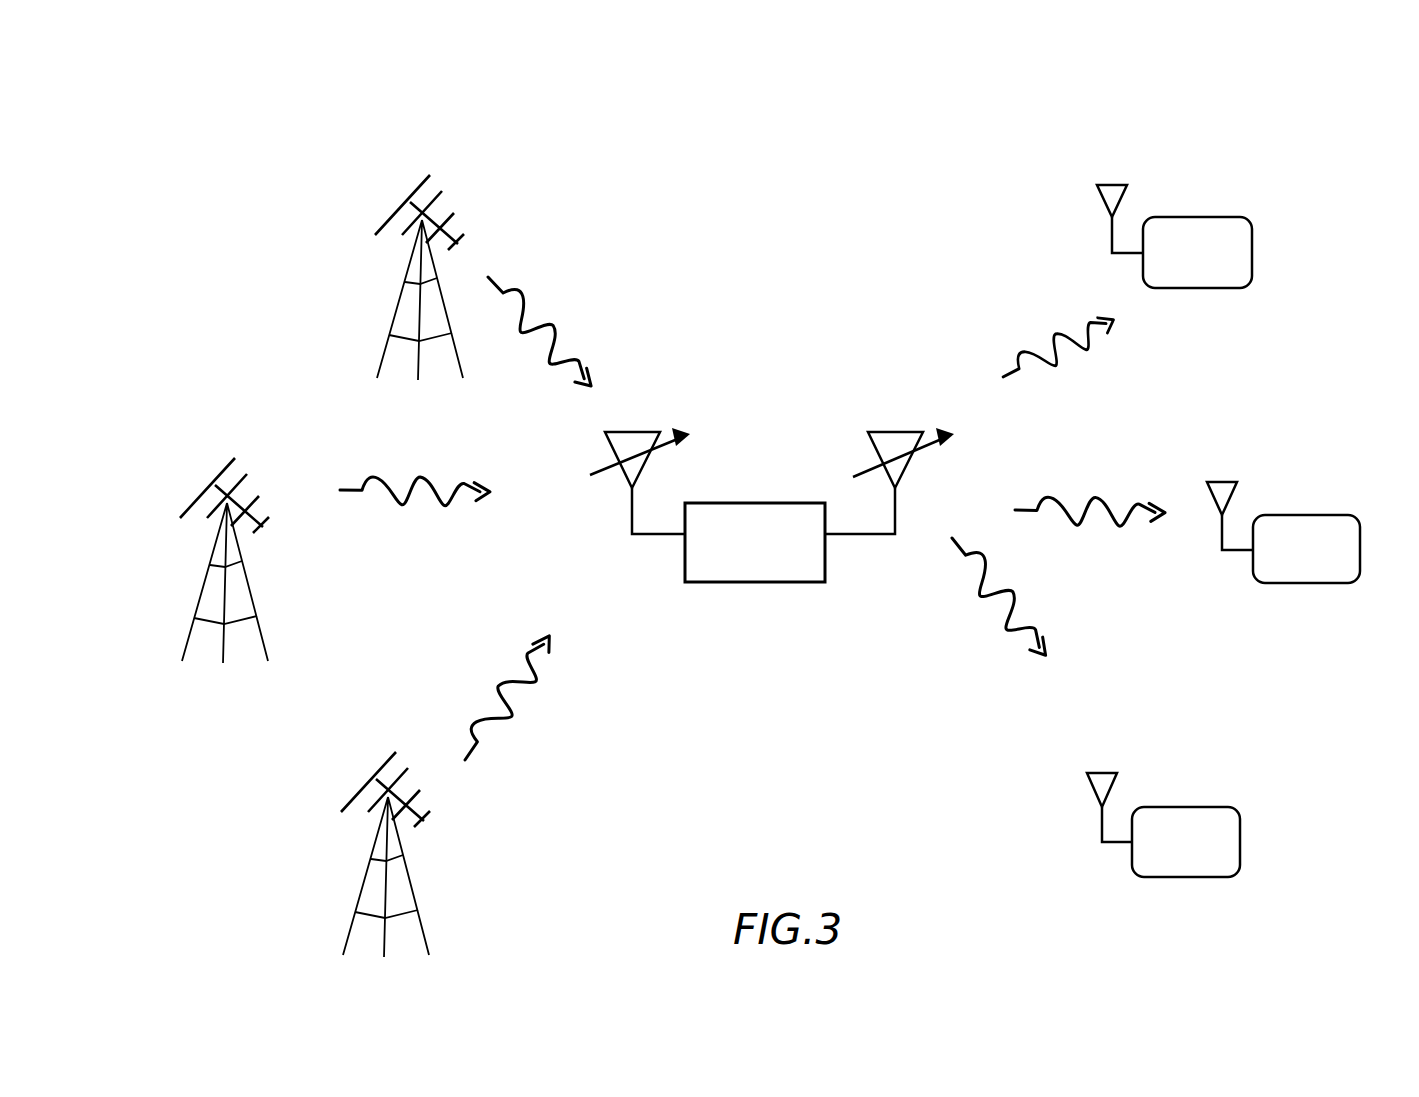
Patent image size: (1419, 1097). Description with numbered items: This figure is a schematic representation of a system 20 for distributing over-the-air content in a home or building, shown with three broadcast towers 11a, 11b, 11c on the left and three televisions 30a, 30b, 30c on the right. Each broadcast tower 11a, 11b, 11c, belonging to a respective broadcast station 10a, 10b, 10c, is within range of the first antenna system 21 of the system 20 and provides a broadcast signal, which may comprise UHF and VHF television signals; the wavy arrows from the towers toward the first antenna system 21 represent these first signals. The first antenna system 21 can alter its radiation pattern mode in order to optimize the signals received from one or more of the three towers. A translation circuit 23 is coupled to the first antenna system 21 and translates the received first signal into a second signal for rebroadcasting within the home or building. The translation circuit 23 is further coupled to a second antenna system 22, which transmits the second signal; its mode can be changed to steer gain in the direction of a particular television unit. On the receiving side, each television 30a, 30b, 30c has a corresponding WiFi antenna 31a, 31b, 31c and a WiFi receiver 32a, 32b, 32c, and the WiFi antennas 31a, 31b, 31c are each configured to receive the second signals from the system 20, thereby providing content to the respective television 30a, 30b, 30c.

The base station 10a is at (441, 222).
The base station 10b is at (232, 482).
The base station 10c is at (392, 777).
The broadcast tower 11a is at (387, 275).
The broadcast tower 11b is at (192, 558).
The broadcast tower 11c is at (353, 852).
The system 20 is at (779, 475).
The first antenna system 21 is at (628, 430).
The second antenna system 22 is at (893, 432).
The translation circuit 23 is at (748, 582).
The television 30a is at (1163, 216).
The television 30b is at (1278, 512).
The television 30c is at (1156, 804).
The WiFi antenna 31a is at (1112, 183).
The WiFi antenna 31b is at (1222, 480).
The WiFi antenna 31c is at (1102, 770).
The WiFi receiver 32a is at (1192, 288).
The WiFi receiver 32b is at (1302, 583).
The WiFi receiver 32c is at (1182, 877).